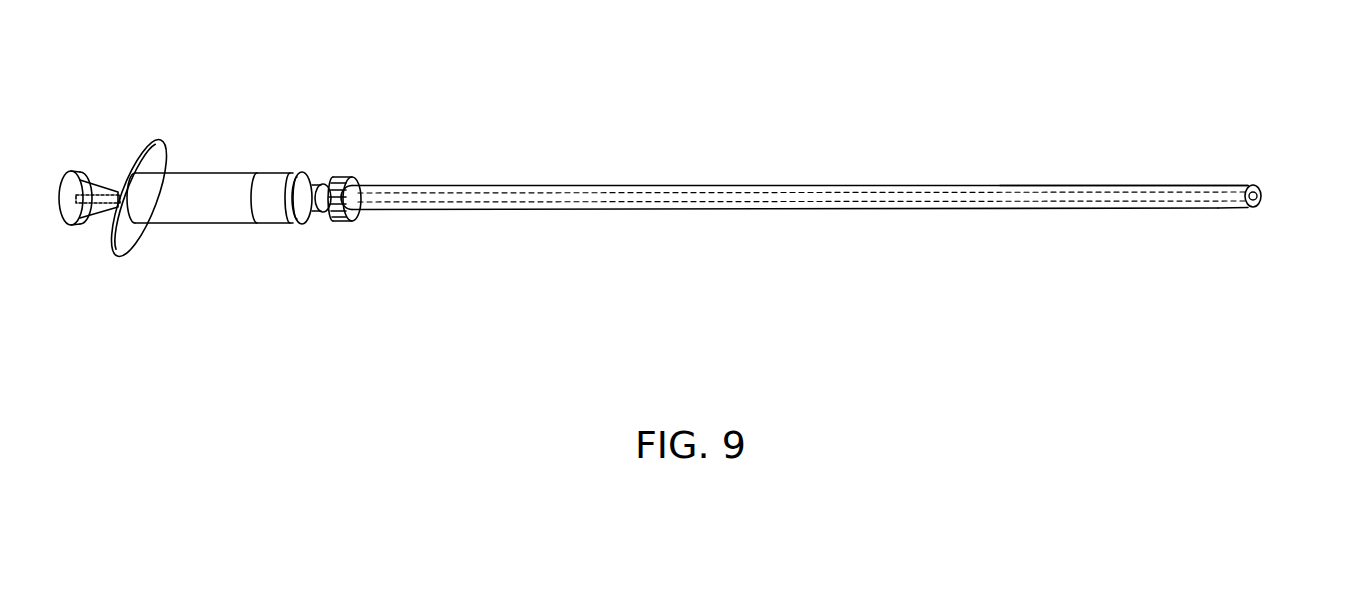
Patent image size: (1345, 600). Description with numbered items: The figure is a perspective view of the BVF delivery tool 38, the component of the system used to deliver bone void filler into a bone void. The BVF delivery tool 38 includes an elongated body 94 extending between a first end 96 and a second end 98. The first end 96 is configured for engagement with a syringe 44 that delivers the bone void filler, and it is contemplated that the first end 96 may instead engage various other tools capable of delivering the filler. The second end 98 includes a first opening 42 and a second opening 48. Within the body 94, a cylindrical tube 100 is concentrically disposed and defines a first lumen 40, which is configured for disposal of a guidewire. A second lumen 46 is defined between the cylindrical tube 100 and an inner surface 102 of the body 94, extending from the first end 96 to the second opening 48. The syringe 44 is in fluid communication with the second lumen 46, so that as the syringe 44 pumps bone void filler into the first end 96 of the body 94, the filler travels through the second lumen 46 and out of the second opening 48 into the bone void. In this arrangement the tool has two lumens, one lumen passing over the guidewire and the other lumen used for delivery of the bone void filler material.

The BVF delivery tool 38 is at (620, 100).
The first lumen 40 is at (1187, 186).
The first opening 42 is at (1260, 185).
The syringe 44 is at (232, 181).
The second lumen 46 is at (1262, 198).
The second opening 48 is at (1258, 208).
The body 94 is at (858, 184).
The first end 96 is at (428, 184).
The second end 98 is at (1083, 184).
The cylindrical tube 100 is at (1137, 200).
The inner surface 102 is at (992, 188).